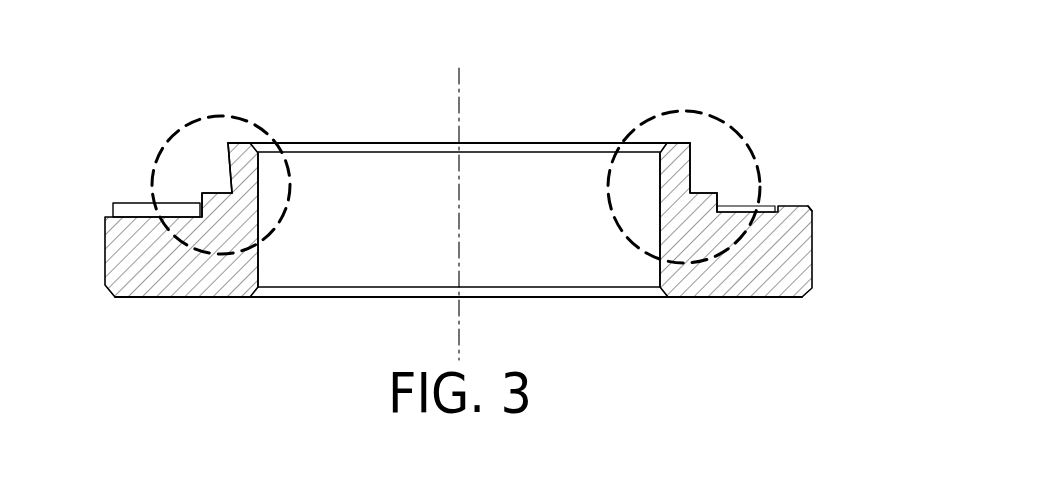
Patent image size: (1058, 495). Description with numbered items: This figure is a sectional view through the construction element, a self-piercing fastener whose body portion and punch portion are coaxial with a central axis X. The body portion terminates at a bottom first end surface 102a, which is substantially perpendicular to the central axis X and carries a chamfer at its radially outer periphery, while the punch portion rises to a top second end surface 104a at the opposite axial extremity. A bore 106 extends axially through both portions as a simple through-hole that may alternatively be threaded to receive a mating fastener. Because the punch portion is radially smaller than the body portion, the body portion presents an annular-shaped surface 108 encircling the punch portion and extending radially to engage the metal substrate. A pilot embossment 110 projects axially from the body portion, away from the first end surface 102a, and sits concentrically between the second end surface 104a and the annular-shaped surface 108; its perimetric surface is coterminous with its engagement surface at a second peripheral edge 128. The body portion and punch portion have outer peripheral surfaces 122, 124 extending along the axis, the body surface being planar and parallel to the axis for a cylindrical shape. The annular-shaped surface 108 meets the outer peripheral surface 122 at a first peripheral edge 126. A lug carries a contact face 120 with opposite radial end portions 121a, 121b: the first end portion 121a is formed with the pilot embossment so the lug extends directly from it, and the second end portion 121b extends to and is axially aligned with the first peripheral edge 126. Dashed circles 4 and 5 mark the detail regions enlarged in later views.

The central axis X is at (457, 82).
The detail region of FIG. 4 is at (237, 118).
The detail region of FIG. 5 is at (690, 107).
The first end surface 102a is at (582, 298).
The second end surface 104a is at (540, 142).
The bore 106 is at (370, 184).
The annular-shaped surface 108 is at (127, 206).
The pilot embossment 110 is at (210, 184).
The contact face 120 is at (779, 207).
The first end portion 121a is at (723, 207).
The second end portion 121b is at (819, 210).
The outer peripheral surface of the body portion 122 is at (813, 266).
The outer peripheral surface of the punch portion 124 is at (698, 166).
The first peripheral edge 126 is at (107, 217).
The second peripheral edge 128 is at (202, 192).